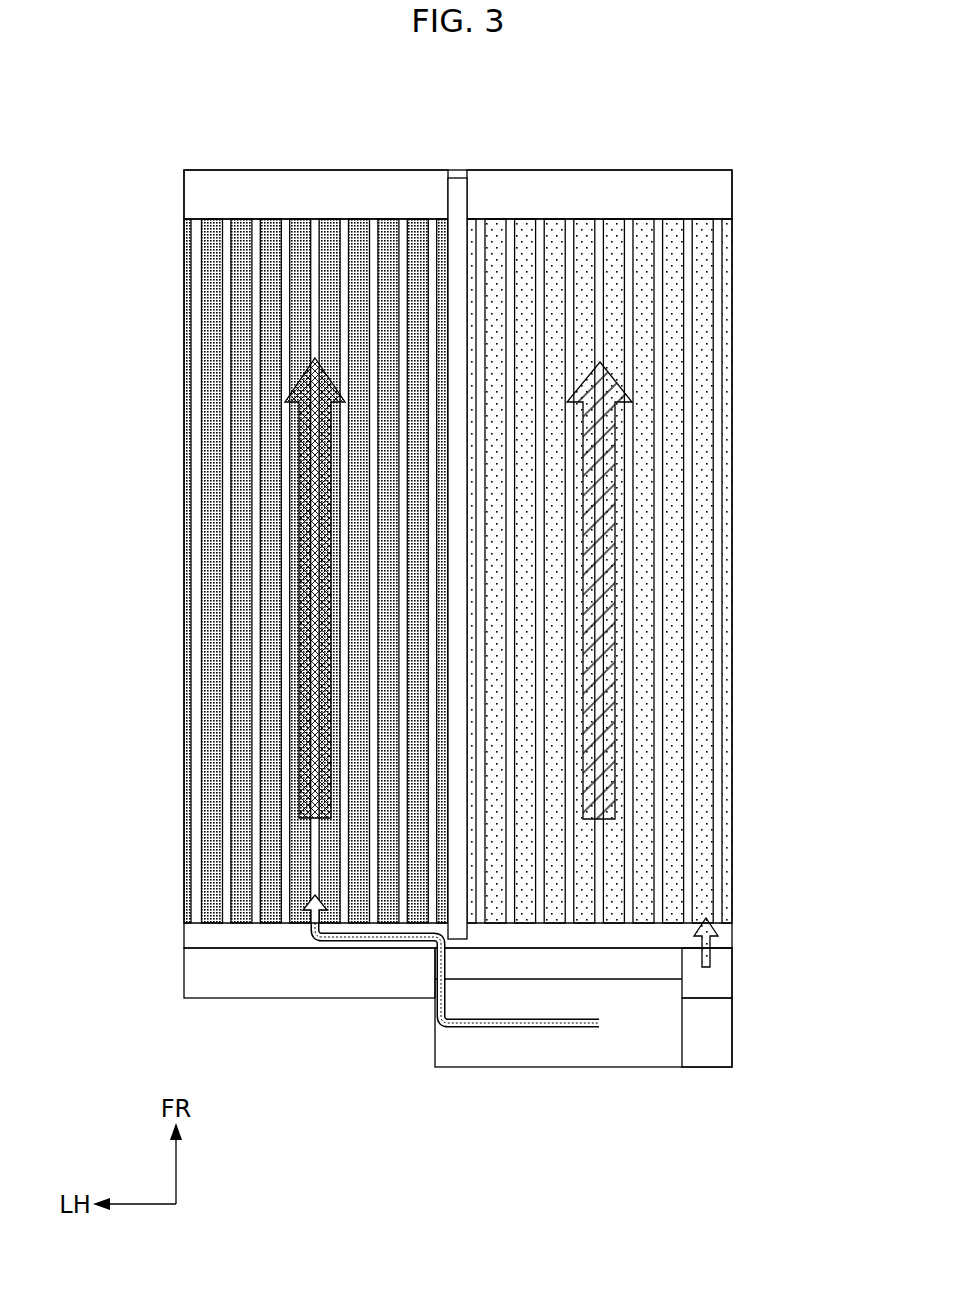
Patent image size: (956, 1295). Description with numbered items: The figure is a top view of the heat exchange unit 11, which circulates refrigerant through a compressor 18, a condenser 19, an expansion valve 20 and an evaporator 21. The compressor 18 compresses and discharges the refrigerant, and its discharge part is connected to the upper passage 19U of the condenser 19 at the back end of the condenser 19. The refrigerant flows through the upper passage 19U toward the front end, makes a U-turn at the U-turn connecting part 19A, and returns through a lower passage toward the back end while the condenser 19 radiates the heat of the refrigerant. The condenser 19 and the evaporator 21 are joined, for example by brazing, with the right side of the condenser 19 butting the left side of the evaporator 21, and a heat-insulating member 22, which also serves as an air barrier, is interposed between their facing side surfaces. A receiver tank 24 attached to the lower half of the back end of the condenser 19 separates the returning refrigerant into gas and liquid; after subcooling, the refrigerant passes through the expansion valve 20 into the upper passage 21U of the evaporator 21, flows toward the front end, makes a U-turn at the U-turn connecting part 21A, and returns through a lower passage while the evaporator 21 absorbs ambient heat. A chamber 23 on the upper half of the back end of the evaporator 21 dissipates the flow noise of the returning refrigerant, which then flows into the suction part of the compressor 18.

The heat exchange unit 11 is at (648, 140).
The compressor 18 is at (543, 1078).
The condenser 19 is at (180, 406).
The U-turn connecting part 19A is at (278, 172).
The upper passage 19U is at (235, 730).
The expansion valve 20 is at (707, 985).
The evaporator 21 is at (740, 358).
The U-turn connecting part 21A is at (571, 175).
The upper passage 21U is at (640, 740).
The heat-insulating member 22 is at (450, 262).
The chamber 23 is at (707, 1034).
The receiver tank 24 is at (292, 996).